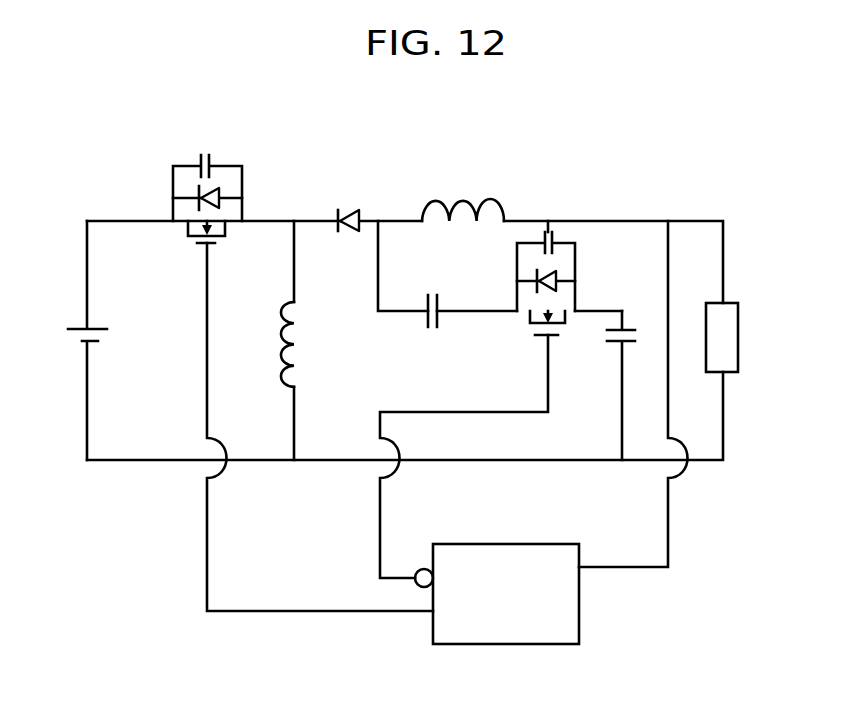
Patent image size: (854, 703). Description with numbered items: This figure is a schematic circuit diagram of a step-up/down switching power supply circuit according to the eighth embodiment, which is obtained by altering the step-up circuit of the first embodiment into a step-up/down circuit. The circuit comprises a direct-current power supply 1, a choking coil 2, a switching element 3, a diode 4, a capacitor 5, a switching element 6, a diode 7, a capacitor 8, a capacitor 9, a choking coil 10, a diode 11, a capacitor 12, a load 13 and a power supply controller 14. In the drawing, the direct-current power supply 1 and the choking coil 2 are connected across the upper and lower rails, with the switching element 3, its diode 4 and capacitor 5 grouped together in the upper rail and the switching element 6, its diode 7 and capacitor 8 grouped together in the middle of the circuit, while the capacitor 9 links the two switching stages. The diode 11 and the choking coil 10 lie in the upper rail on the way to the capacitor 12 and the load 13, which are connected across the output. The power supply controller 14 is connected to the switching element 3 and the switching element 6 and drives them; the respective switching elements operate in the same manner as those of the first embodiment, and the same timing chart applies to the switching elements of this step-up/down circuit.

The direct-current power supply 1 is at (78, 327).
The choking coil 2 is at (294, 348).
The switching element 3 is at (232, 229).
The diode 4 is at (227, 182).
The capacitor 5 is at (194, 160).
The switching element 6 is at (523, 330).
The diode 7 is at (548, 267).
The capacitor 8 is at (548, 230).
The capacitor 9 is at (428, 297).
The choking coil 10 is at (480, 200).
The diode 11 is at (345, 203).
The capacitor 12 is at (628, 317).
The load 13 is at (743, 333).
The power supply controller 14 is at (518, 542).